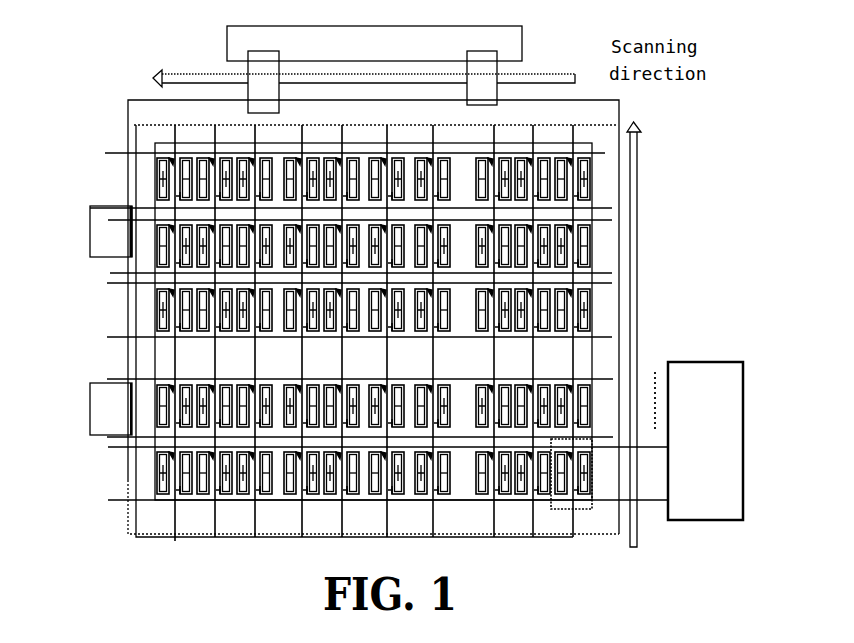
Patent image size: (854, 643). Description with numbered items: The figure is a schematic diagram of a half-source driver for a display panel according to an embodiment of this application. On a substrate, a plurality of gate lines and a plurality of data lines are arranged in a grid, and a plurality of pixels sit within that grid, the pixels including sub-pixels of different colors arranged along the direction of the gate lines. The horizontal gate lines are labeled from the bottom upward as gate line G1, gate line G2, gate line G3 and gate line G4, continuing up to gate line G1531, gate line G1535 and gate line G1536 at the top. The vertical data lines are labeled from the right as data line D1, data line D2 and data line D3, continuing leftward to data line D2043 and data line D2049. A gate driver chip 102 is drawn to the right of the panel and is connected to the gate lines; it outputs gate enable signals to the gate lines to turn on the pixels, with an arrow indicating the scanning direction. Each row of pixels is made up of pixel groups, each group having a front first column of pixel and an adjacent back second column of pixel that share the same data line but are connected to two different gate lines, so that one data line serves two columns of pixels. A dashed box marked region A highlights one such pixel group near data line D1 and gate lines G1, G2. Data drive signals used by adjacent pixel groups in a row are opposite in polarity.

The gate driver chip 102 is at (705, 441).
The gate line G1 is at (378, 498).
The gate line G2 is at (376, 452).
The gate line G3 is at (351, 410).
The gate line G4 is at (350, 370).
The gate line G1531 is at (338, 333).
The gate line G1535 is at (333, 221).
The gate line G1536 is at (327, 148).
The data line D1 is at (574, 322).
The data line D2 is at (535, 322).
The data line D3 is at (495, 322).
The data line D2043 is at (435, 321).
The data line D2049 is at (172, 323).
The pixel region A is at (578, 484).